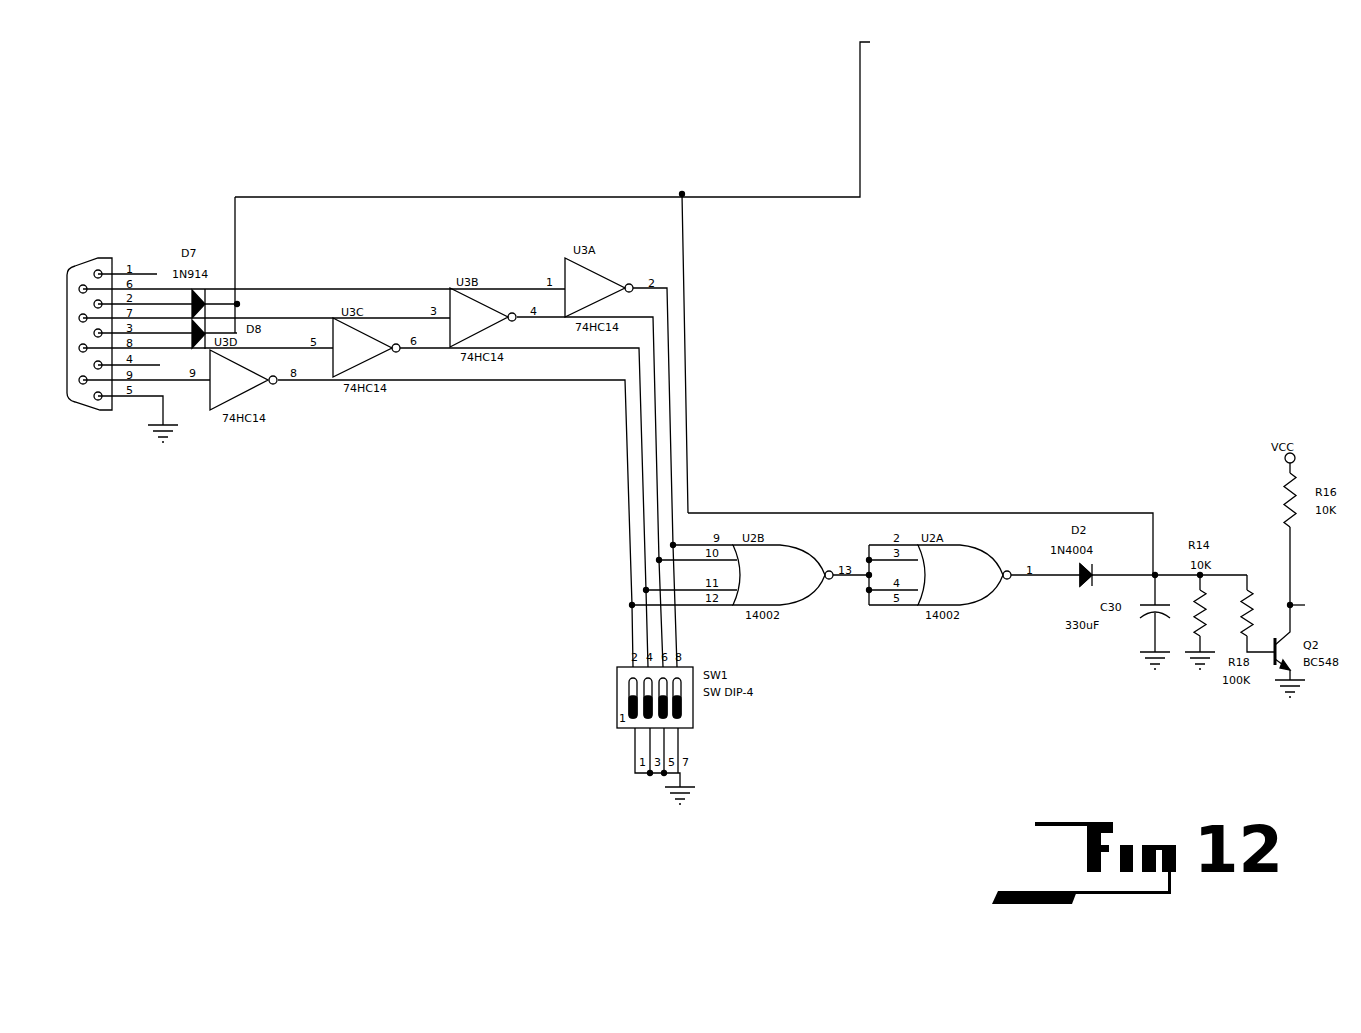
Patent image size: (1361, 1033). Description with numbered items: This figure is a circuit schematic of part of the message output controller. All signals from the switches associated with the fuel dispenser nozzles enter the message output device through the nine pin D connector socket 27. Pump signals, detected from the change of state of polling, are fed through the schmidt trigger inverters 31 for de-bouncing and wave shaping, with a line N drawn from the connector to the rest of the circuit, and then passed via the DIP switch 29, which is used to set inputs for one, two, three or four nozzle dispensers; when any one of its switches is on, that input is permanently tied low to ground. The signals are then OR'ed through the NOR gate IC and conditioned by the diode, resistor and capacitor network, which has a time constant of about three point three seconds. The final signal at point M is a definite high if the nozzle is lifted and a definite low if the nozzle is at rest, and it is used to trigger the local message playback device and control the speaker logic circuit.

The 9 pin D connector socket 27 is at (105, 258).
The DIP switch 29 is at (617, 723).
The inverter 31 is at (303, 289).
The signal line N is at (566, 271).
The point M is at (1309, 608).